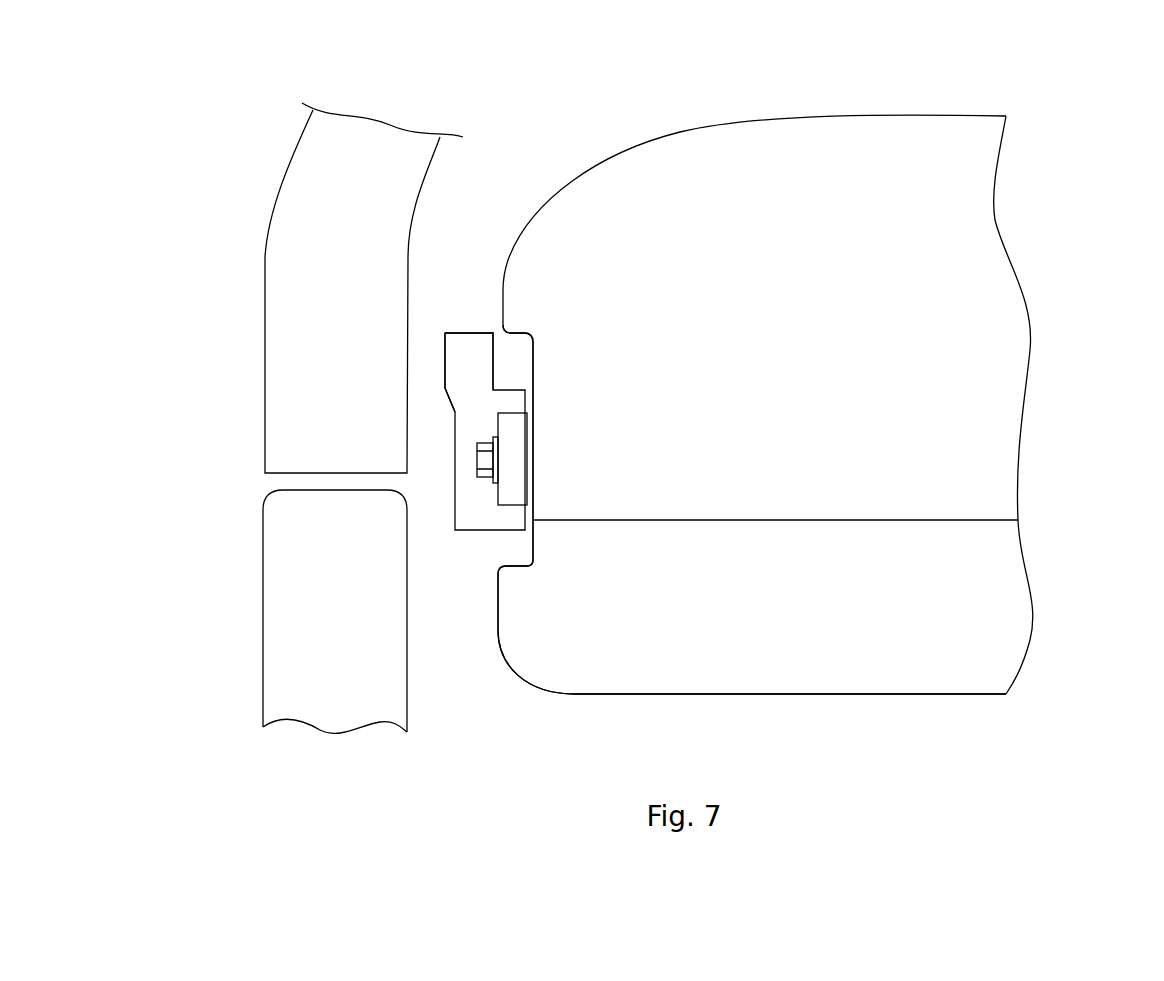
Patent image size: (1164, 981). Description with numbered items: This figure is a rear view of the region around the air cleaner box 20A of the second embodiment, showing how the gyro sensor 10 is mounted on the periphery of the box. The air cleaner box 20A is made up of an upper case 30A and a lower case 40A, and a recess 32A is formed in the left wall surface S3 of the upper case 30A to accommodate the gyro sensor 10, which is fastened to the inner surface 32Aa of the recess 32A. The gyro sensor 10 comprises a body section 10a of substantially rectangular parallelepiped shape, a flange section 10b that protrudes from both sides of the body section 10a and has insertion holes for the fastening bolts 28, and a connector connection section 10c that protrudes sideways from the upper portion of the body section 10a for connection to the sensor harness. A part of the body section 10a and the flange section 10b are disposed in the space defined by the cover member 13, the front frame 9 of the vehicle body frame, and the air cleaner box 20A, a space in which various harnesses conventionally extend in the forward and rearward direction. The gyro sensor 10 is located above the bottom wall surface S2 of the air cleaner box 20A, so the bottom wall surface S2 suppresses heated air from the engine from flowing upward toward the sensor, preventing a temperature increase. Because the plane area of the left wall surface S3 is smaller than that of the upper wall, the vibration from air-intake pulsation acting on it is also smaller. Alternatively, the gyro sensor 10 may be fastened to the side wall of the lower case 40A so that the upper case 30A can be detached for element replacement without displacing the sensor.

The cover member 13 is at (303, 155).
The front frame 9 is at (280, 547).
The air cleaner box 20A is at (997, 116).
The upper case 30A is at (1009, 438).
The lower case 40A is at (1011, 624).
The recess 32A is at (518, 566).
The inner surface 32Aa is at (528, 370).
The left wall surface S3 is at (495, 310).
The bottom wall surface S2 is at (938, 116).
The gyro sensor 10 is at (485, 509).
The body section 10a is at (472, 420).
The flange section 10b is at (513, 493).
The connector connection section 10c is at (458, 362).
The bolt 28 is at (475, 455).